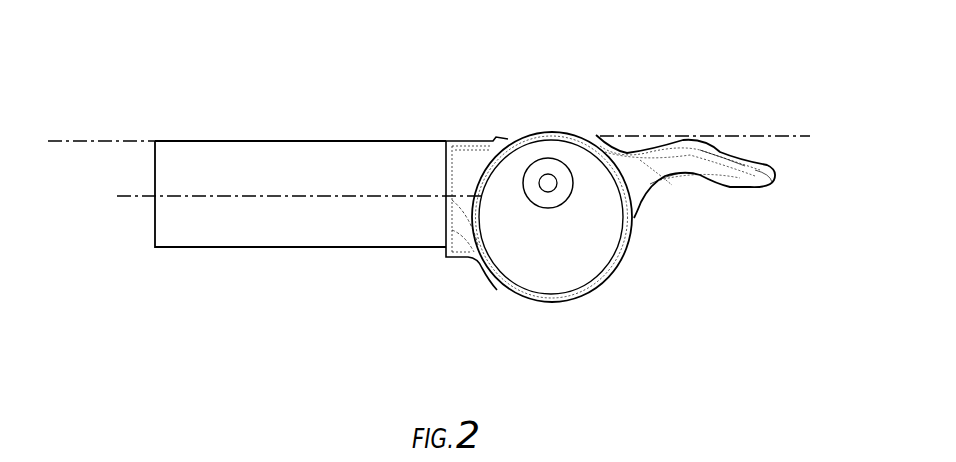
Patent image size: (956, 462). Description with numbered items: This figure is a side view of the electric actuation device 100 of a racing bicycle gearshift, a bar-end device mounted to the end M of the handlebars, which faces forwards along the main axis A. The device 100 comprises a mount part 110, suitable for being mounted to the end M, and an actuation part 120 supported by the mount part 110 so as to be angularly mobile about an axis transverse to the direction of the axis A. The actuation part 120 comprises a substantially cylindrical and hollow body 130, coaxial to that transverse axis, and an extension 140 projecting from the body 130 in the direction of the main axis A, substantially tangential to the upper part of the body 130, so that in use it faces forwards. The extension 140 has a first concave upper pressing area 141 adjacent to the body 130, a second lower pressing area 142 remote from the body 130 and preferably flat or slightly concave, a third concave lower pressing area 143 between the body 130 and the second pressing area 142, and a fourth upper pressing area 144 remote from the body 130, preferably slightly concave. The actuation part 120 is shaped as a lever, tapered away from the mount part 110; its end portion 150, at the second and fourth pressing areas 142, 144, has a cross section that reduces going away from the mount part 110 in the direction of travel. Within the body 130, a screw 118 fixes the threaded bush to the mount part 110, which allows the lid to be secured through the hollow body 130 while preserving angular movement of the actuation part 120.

The electric actuation device 100 is at (496, 92).
The mount part 110 is at (465, 148).
The screw 118 is at (548, 197).
The actuation part 120 is at (643, 169).
The body 130 is at (541, 124).
The extension 140 is at (690, 132).
The first concave upper pressing area 141 is at (632, 157).
The second lower pressing area 142 is at (748, 187).
The third concave lower pressing area 143 is at (659, 182).
The fourth upper pressing area 144 is at (728, 158).
The end portion 150 is at (743, 168).
The main axis A is at (112, 141).
The end of handlebars M is at (228, 158).